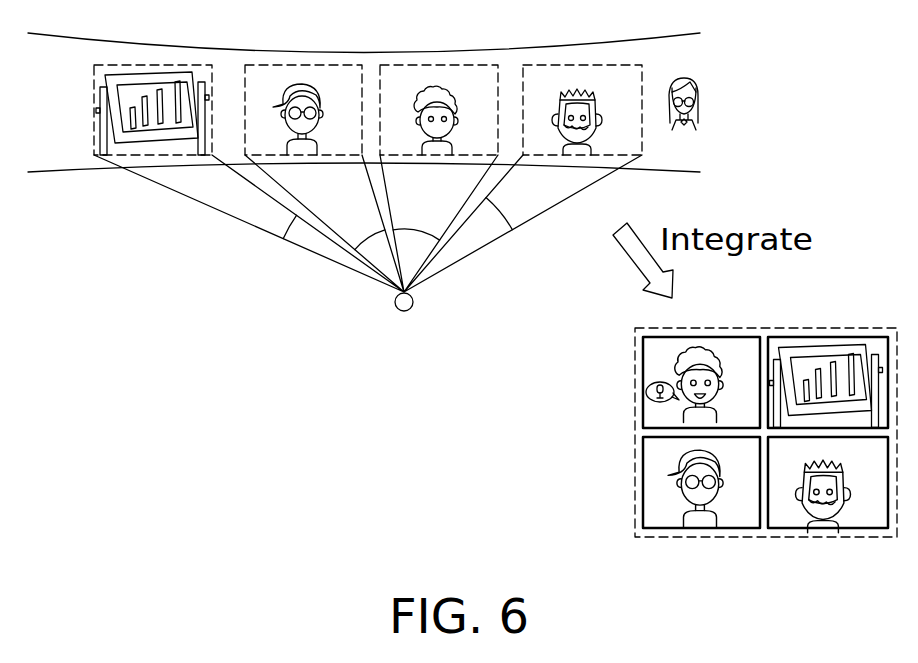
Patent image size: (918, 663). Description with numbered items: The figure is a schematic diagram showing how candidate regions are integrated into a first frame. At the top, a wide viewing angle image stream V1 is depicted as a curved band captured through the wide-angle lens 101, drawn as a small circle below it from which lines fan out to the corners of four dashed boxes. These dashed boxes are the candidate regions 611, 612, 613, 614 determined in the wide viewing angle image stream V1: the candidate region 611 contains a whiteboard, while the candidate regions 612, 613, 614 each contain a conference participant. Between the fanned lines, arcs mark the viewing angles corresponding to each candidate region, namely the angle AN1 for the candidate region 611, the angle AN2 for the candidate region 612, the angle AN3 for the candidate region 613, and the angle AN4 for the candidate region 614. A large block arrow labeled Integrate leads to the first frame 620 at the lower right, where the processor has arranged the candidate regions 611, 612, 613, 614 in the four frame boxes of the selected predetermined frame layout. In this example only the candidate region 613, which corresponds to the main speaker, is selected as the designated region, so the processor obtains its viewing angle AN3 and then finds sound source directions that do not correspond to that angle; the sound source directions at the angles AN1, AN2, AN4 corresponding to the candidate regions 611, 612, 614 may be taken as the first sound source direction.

The candidate region 611 is at (197, 64).
The candidate region 612 is at (336, 64).
The candidate region 613 is at (425, 64).
The candidate region 614 is at (548, 64).
The wide-angle lens 101 is at (394, 303).
The first frame 620 is at (578, 440).
The wide viewing angle image stream V1 is at (756, 94).
The angle AN1 is at (262, 215).
The angle AN2 is at (357, 225).
The angle AN3 is at (417, 218).
The angle AN4 is at (518, 202).